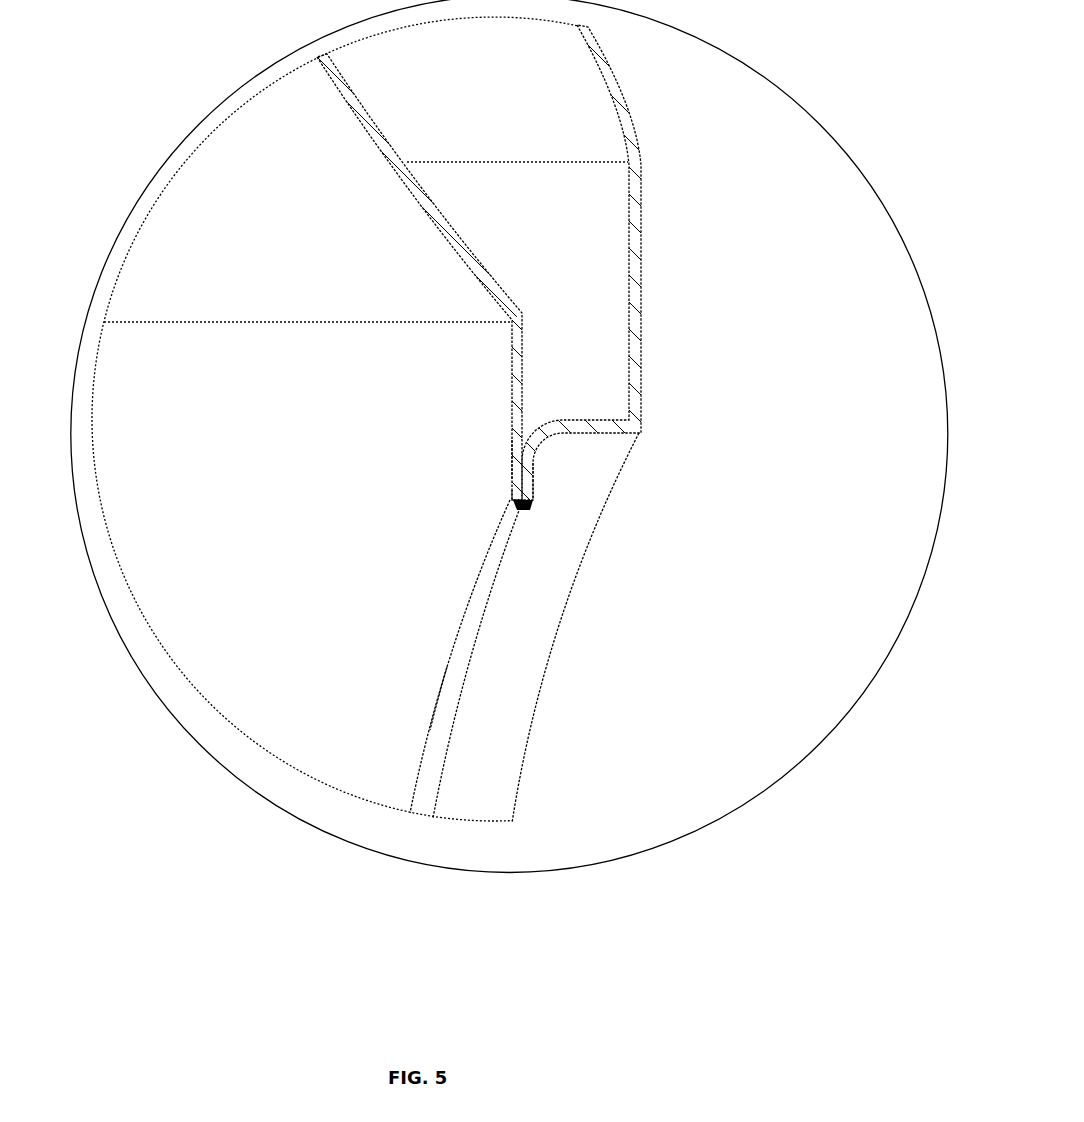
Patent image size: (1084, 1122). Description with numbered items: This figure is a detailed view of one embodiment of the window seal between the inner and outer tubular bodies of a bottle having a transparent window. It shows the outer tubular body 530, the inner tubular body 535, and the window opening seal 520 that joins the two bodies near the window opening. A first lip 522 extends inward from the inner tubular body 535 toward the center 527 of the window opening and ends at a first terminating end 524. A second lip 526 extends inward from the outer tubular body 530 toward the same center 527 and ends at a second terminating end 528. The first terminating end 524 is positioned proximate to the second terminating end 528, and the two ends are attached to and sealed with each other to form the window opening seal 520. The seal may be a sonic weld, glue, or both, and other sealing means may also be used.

The window opening seal 520 is at (530, 508).
The first lip 522 is at (511, 462).
The first terminating end 524 is at (511, 496).
The second lip 526 is at (540, 470).
The center of the window opening 527 is at (472, 710).
The second terminating end 528 is at (535, 489).
The outer tubular body 530 is at (642, 267).
The inner tubular body 535 is at (523, 403).